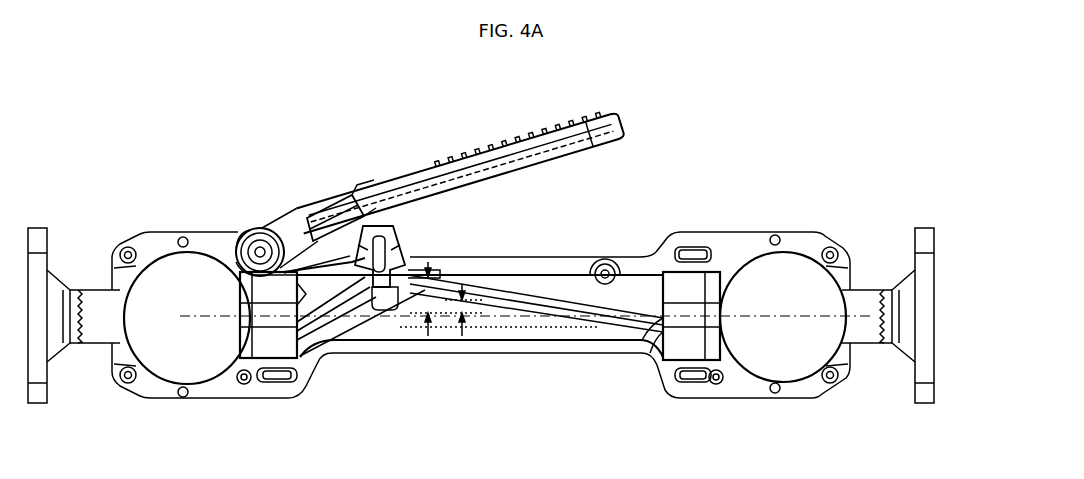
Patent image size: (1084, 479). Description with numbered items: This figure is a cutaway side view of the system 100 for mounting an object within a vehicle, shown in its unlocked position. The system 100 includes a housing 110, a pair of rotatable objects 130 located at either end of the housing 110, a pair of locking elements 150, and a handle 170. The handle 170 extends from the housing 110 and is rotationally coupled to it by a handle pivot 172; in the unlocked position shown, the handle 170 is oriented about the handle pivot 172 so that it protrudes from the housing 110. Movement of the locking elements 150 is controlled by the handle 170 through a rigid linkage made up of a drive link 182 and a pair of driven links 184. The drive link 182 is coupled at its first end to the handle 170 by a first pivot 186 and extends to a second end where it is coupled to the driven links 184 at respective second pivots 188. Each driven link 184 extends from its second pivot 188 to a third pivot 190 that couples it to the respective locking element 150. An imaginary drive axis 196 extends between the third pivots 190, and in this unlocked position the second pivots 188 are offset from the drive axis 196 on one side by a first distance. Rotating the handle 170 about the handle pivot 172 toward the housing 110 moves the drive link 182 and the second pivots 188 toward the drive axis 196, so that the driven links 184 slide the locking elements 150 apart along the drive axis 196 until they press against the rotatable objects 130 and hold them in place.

The system 100 is at (738, 109).
The housing 110 is at (596, 257).
The rotatable objects 130 is at (152, 368).
The locking elements 150 is at (277, 383).
The handle 170 is at (386, 182).
The handle pivot 172 is at (262, 227).
The drive link 182 is at (414, 252).
The driven links 184 is at (358, 330).
The first pivot 186 is at (375, 216).
The second pivots 188 is at (430, 268).
The third pivot 190 is at (320, 372).
The drive axis 196 is at (786, 231).